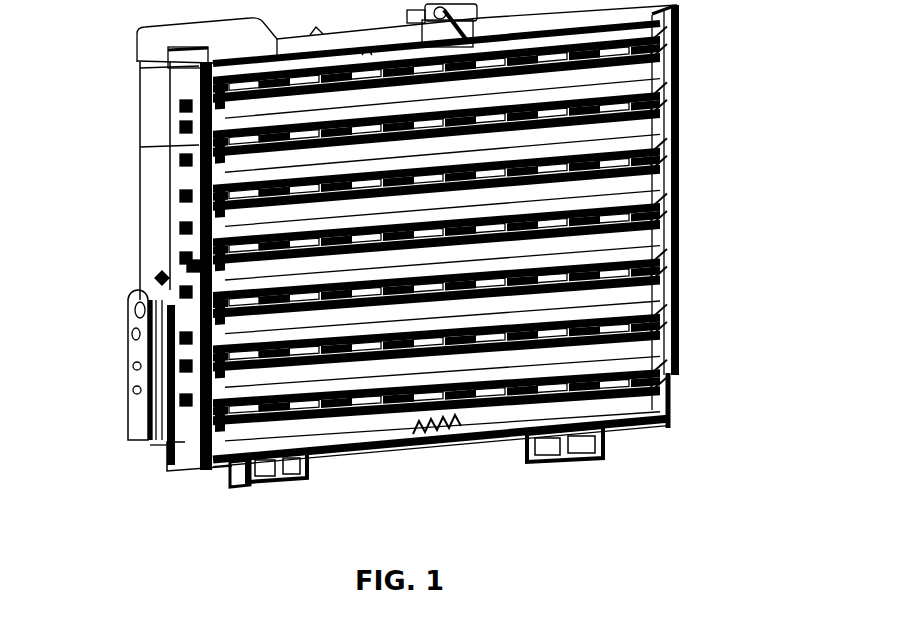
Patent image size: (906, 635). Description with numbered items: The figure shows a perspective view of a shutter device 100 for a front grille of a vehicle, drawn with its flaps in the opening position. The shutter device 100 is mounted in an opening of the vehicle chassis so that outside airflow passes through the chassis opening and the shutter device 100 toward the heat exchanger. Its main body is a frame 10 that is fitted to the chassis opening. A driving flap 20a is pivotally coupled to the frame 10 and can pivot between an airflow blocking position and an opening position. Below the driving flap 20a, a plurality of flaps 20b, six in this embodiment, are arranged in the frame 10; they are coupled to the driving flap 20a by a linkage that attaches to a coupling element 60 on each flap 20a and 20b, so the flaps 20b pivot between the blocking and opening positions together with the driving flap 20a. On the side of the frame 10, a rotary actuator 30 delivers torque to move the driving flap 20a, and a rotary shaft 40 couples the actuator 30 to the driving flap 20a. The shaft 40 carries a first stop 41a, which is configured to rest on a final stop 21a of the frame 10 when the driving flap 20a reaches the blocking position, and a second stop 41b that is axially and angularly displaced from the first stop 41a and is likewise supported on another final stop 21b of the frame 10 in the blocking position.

The shutter device 100 is at (712, 376).
The frame 10 is at (686, 198).
The driving flap 20a is at (631, 276).
The flaps 20b is at (603, 106).
The final stop 21a is at (135, 405).
The final stop 21b is at (190, 285).
The rotary actuator 30 is at (127, 317).
The rotary shaft 40 is at (172, 319).
The first stop 41a is at (160, 281).
The second stop 41b is at (186, 400).
The coupling element 60 is at (182, 102).